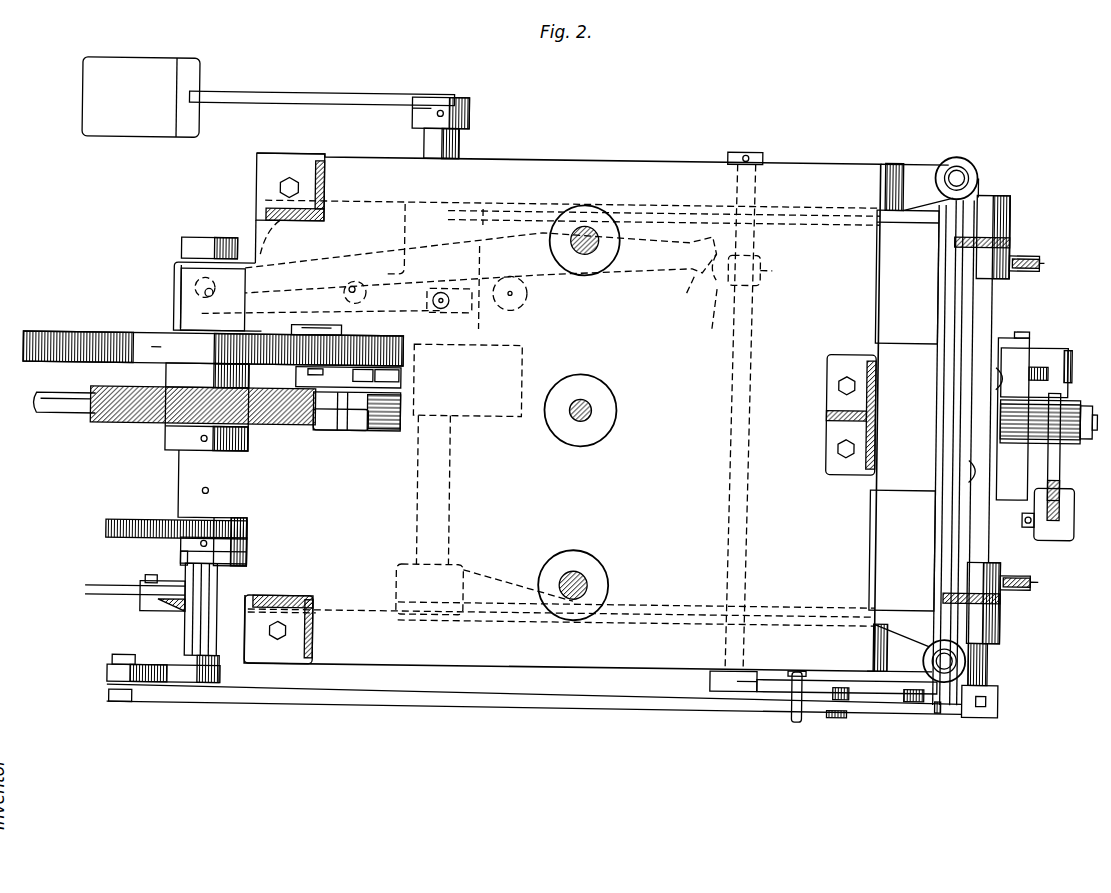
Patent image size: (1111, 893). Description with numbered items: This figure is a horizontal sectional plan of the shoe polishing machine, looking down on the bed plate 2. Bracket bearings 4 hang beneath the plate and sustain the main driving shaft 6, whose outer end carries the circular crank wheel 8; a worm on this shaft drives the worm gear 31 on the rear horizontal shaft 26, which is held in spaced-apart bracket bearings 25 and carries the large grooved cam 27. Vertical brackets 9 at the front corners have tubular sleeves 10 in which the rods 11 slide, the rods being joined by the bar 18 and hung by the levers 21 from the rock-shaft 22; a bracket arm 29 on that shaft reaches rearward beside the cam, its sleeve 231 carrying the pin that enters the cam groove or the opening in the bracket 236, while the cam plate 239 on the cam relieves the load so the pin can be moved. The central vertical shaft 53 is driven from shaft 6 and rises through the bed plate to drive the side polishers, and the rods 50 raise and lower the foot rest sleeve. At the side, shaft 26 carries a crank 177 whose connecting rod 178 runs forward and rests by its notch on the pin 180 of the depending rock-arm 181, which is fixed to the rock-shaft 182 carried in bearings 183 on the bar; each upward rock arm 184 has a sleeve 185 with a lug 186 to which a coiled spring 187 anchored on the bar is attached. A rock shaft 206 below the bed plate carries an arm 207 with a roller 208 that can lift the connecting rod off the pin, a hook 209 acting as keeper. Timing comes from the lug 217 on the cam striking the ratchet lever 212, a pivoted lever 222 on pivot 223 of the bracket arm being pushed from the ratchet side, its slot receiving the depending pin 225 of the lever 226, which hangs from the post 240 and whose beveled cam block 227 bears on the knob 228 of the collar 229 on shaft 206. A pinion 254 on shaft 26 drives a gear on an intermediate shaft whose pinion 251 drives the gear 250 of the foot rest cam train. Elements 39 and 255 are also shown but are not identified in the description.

The bed plate 2 is at (562, 408).
The bracket bearing 4 is at (342, 433).
The main driving shaft 6 is at (65, 419).
The circular crank wheel 8 is at (1014, 332).
The vertical bracket 9 is at (923, 417).
The tubular sleeve 10 is at (945, 158).
The rod 11 is at (958, 160).
The bar 18 is at (936, 531).
The lever 21 is at (918, 222).
The rock-shaft 22 is at (452, 518).
The bracket bearing 25 is at (185, 300).
The horizontal shaft 26 is at (192, 620).
The cam 27 is at (32, 338).
The bracket arm 29 is at (305, 287).
The worm gear 31 is at (116, 428).
The rod 39 is at (1055, 466).
The rod 50 is at (588, 250).
The central vertical shaft 53 is at (592, 406).
The crank 177 is at (160, 692).
The connecting rod 178 is at (405, 708).
The pin 180 is at (912, 710).
The rock-arm 181 is at (940, 712).
The rock-shaft 182 is at (992, 668).
The bearing 183 is at (1007, 210).
The rock arm 184 is at (952, 240).
The sleeve 185 is at (978, 262).
The pin or lug 186 is at (1022, 592).
The coiled spring 187 is at (1022, 266).
The rock shaft 206 is at (750, 527).
The arm 207 is at (713, 678).
The roller 208 is at (832, 715).
The hook 209 is at (795, 712).
The ratchet lever 212 is at (390, 380).
The lug 217 is at (395, 357).
The pivoted lever 222 is at (384, 272).
The pivot 223 is at (352, 286).
The depending pin 225 is at (440, 295).
The lever 226 is at (577, 292).
The beveled cam block 227 is at (678, 299).
The knob 228 is at (700, 323).
The collar 229 is at (770, 272).
The sleeve 231 is at (172, 277).
The bracket 236 is at (200, 240).
The cam plate 239 is at (300, 334).
The depending post or stud 240 is at (507, 284).
The gear 250 is at (250, 550).
The pinion 251 is at (182, 560).
The pinion 254 is at (240, 525).
The rack 255 is at (128, 525).